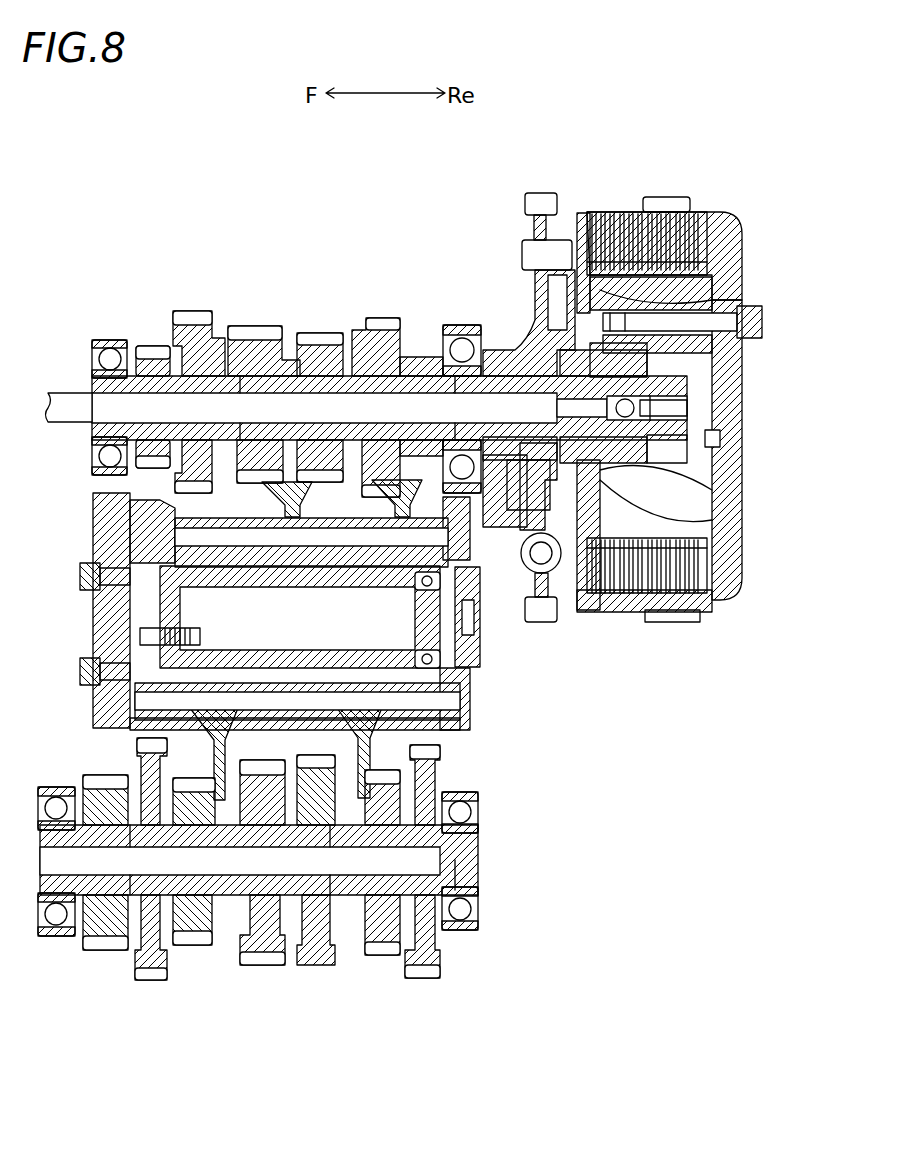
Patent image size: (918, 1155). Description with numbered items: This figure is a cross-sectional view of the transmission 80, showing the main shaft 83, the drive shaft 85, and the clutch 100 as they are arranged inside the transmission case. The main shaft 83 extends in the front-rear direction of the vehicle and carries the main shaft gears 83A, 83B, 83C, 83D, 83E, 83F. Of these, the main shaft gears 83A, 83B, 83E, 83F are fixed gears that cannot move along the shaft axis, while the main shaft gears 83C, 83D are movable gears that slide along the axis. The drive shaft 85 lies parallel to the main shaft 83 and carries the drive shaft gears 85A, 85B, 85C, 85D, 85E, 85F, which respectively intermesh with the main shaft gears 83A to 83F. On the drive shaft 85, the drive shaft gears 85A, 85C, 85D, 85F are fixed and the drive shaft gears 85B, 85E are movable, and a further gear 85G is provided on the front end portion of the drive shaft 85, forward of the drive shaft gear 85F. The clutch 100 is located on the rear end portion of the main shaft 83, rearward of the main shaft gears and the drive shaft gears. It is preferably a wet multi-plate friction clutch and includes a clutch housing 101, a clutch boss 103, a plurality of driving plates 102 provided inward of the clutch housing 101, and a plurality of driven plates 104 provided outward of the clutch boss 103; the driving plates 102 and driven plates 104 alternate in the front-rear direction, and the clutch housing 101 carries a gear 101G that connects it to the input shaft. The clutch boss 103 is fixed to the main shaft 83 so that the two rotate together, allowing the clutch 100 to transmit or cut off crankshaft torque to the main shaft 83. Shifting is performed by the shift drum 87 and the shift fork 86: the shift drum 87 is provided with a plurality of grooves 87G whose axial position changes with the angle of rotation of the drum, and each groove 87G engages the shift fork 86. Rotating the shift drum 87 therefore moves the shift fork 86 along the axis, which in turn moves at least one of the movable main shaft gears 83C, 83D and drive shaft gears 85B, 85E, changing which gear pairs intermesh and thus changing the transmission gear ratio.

The transmission 80 is at (731, 174).
The main shaft 83 is at (143, 427).
The main shaft gear 83A is at (418, 360).
The main shaft gear 83B is at (380, 325).
The main shaft gear 83C is at (320, 340).
The main shaft gear 83D is at (258, 332).
The main shaft gear 83E is at (193, 315).
The main shaft gear 83F is at (150, 350).
The drive shaft 85 is at (473, 913).
The drive shaft gear 85A is at (428, 972).
The drive shaft gear 85B is at (380, 950).
The drive shaft gear 85C is at (308, 958).
The drive shaft gear 85D is at (252, 955).
The drive shaft gear 85E is at (188, 940).
The drive shaft gear 85F is at (143, 972).
The gear 85G is at (102, 940).
The shift fork 86 is at (233, 512).
The shift drum 87 is at (143, 600).
The groove 87G is at (273, 535).
The clutch 100 is at (771, 262).
The clutch housing 101 is at (610, 612).
The gear 101G is at (542, 618).
The driving plate 102 is at (702, 567).
The clutch boss 103 is at (602, 478).
The driven plate 104 is at (675, 616).